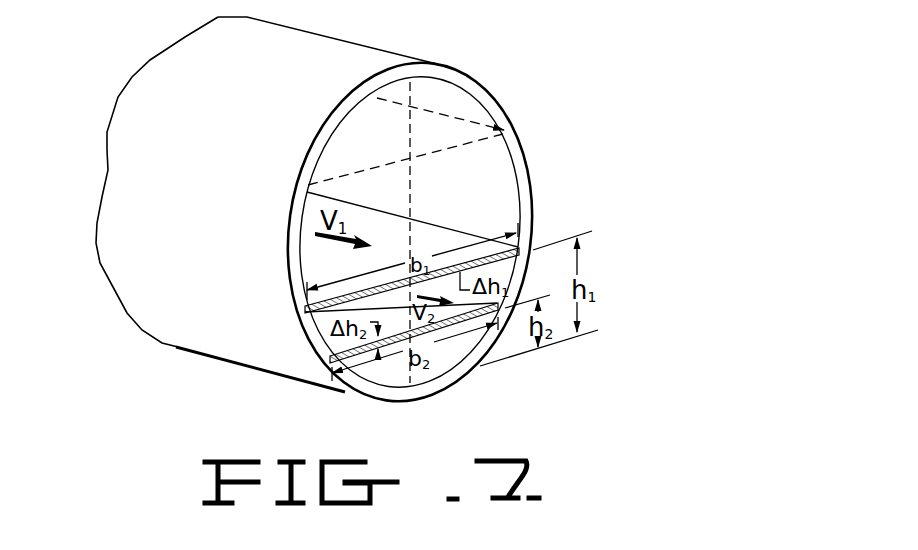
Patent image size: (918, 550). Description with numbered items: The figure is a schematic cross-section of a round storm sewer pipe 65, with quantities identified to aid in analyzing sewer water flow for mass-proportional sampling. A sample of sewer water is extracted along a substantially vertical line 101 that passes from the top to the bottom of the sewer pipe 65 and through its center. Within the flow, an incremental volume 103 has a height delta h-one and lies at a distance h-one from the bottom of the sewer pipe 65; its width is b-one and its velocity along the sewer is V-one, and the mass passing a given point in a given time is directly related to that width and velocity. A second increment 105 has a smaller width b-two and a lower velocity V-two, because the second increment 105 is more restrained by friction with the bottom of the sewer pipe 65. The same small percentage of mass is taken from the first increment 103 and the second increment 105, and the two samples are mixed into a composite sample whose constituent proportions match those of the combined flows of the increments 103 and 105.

The sewer pipe 65 is at (523, 157).
The substantially vertical line 101 is at (410, 86).
The incremental volume 103 is at (518, 249).
The second increment 105 is at (329, 361).